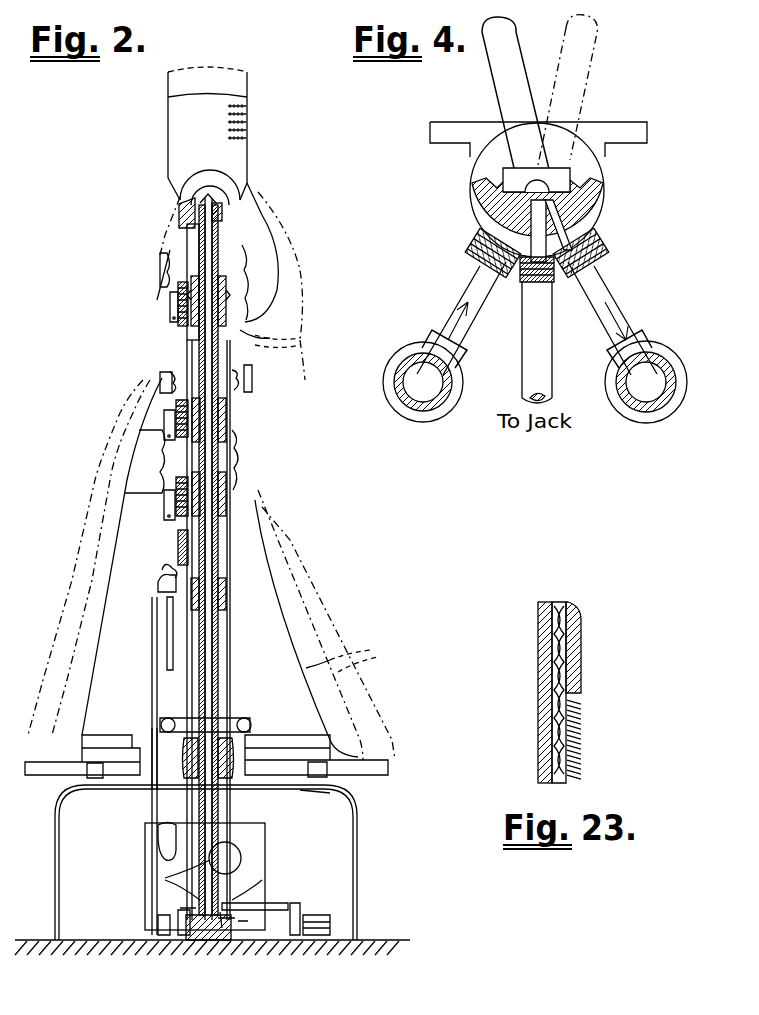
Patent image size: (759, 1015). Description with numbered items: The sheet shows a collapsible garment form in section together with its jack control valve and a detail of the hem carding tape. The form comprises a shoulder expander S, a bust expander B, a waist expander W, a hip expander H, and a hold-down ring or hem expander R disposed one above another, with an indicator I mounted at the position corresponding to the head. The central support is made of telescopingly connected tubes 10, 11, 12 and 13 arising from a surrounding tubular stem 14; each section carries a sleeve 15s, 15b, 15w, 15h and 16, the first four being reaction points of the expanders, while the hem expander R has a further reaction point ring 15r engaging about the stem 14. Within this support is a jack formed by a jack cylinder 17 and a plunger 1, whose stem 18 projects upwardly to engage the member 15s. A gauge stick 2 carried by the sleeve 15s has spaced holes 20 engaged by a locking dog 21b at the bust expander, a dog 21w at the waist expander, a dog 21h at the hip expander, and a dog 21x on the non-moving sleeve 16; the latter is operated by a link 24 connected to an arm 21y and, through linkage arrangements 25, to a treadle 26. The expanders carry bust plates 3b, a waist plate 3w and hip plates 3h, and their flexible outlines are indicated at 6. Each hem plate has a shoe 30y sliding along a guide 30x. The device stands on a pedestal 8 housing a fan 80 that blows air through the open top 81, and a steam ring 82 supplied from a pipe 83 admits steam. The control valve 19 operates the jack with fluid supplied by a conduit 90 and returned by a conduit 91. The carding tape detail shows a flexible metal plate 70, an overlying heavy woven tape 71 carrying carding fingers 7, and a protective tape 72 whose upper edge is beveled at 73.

In FIG. 2, the indicator I is at (245, 162).
In FIG. 2, the shoulder expander S is at (183, 196).
In FIG. 2, the shoulder expander sleeve 15s is at (223, 215).
In FIG. 2, the gauge stick 2 is at (183, 240).
In FIG. 2, the tube 10 is at (216, 255).
In FIG. 2, the bust expander B is at (263, 275).
In FIG. 2, the bust plates 3b is at (270, 275).
In FIG. 2, the locking dog 21b is at (170, 302).
In FIG. 2, the bust expander sleeve 15b is at (226, 322).
In FIG. 2, the spaced holes 20 is at (180, 320).
In FIG. 2, the skirt petals 6 is at (211, 478).
In FIG. 2, the tube 11 is at (220, 366).
In FIG. 2, the waist expander W is at (162, 385).
In FIG. 2, the waist plate 3w is at (252, 380).
In FIG. 2, the locking dog 21w is at (164, 420).
In FIG. 2, the waist expander sleeve 15w is at (227, 425).
In FIG. 2, the hip expander H is at (132, 452).
In FIG. 2, the tube 12 is at (226, 460).
In FIG. 2, the hip plates 3h is at (128, 482).
In FIG. 2, the hip expander sleeve 15h is at (227, 500).
In FIG. 2, the locking dog 21h is at (164, 498).
In FIG. 2, the tube 13 is at (226, 552).
In FIG. 2, the plunger stem 18 is at (177, 547).
In FIG. 2, the locking dog 21x is at (170, 586).
In FIG. 2, the dog arm 21y is at (167, 605).
In FIG. 2, the sleeve 16 is at (228, 600).
In FIG. 2, the tubular stem 14 is at (227, 655).
In FIG. 2, the link 24 is at (153, 668).
In FIG. 2, the steam ring 82 is at (248, 730).
In FIG. 2, the hem expander ring 15r is at (233, 775).
In FIG. 2, the hem expander R is at (358, 758).
In FIG. 2, the guide 30x is at (52, 789).
In FIG. 2, the shoe or sleeve 30y is at (112, 790).
In FIG. 2, the pedestal 8 is at (355, 848).
In FIG. 2, the open top 81 is at (290, 786).
In FIG. 2, the plunger 1 is at (205, 812).
In FIG. 2, the jack cylinder 17 is at (218, 842).
In FIG. 2, the pipe 83 is at (165, 838).
In FIG. 2, the fan 80 is at (168, 880).
In FIG. 2, the linkage arrangements 25 is at (255, 905).
In FIG. 2, the treadle 26 is at (302, 905).
In FIG. 4, the control valve 19 is at (580, 200).
In FIG. 4, the supply conduit 90 is at (448, 392).
In FIG. 4, the return conduit 91 is at (614, 386).
In FIG. 23, the flexible metal plate 70 is at (538, 618).
In FIG. 23, the woven tape 71 is at (556, 604).
In FIG. 23, the protective tape 72 is at (581, 632).
In FIG. 23, the beveled upper edge 73 is at (598, 575).
In FIG. 23, the carding fingers 7 is at (612, 714).